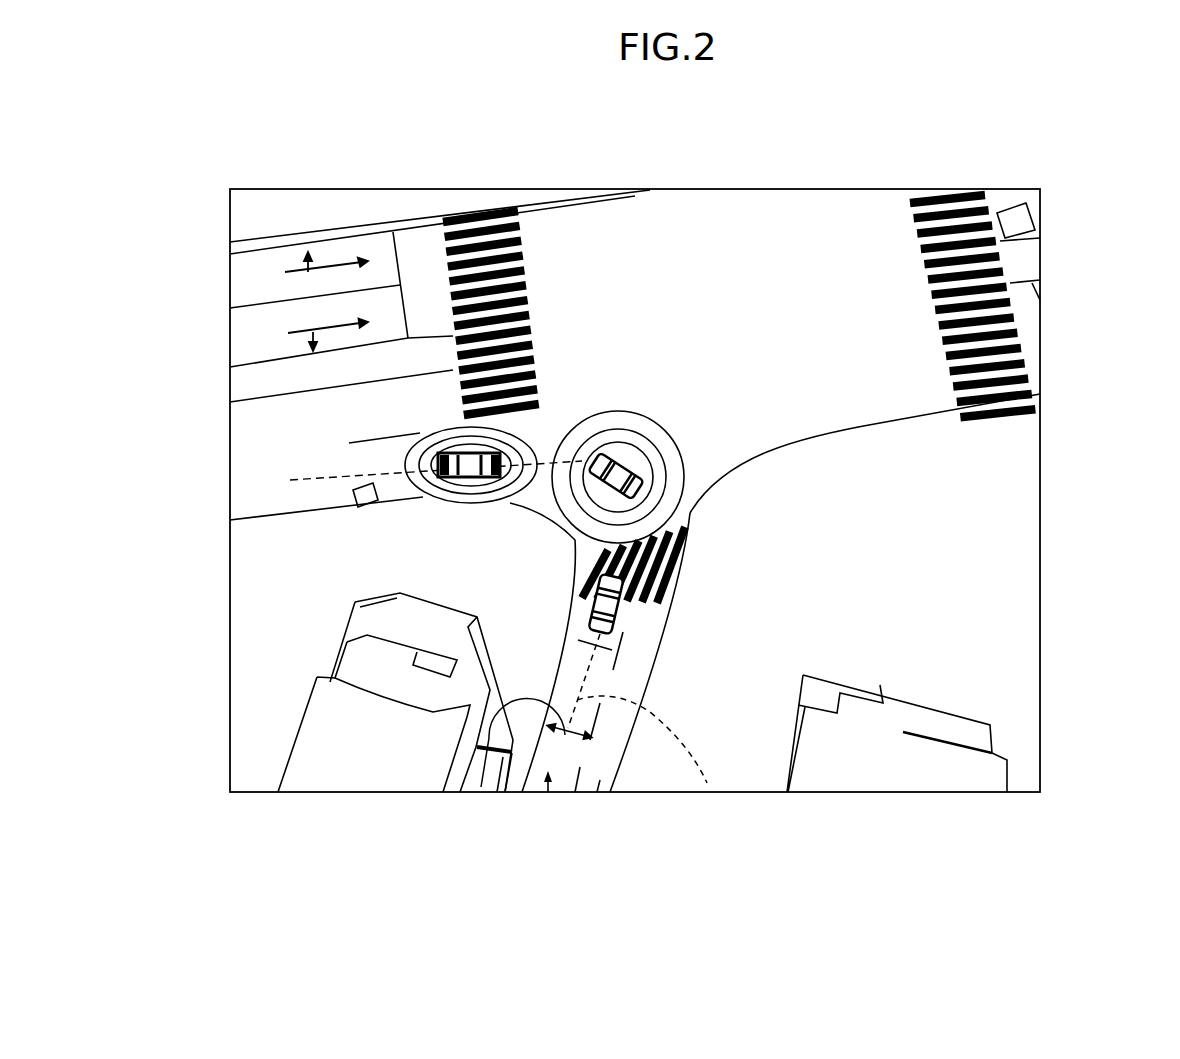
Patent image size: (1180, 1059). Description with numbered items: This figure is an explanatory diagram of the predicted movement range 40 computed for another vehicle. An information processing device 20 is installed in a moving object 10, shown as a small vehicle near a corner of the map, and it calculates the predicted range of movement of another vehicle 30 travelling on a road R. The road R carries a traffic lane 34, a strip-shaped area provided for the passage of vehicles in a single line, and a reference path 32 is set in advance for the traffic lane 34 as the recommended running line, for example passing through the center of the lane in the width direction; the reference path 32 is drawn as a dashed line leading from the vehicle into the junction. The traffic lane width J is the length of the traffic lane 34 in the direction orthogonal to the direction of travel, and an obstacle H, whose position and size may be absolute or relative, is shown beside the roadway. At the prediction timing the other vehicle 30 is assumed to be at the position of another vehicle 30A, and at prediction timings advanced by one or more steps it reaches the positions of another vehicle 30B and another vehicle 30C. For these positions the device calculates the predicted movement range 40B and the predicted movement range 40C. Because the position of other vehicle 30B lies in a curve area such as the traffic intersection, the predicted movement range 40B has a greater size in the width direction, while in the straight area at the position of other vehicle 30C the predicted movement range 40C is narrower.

The moving object 10 is at (1036, 222).
The information processing device 20 is at (1081, 220).
The other vehicle 30 is at (799, 363).
The other vehicle 30A position 30A is at (617, 618).
The other vehicle 30B position 30B is at (638, 492).
The other vehicle 30C position 30C is at (477, 452).
The predicted movement range 40 is at (624, 306).
The predicted movement range 40B is at (655, 413).
The predicted movement range 40C is at (433, 427).
The reference path 32 is at (707, 783).
The traffic lane 34 is at (548, 792).
The obstacle H is at (370, 507).
The traffic lane width J is at (481, 787).
The road R is at (597, 792).